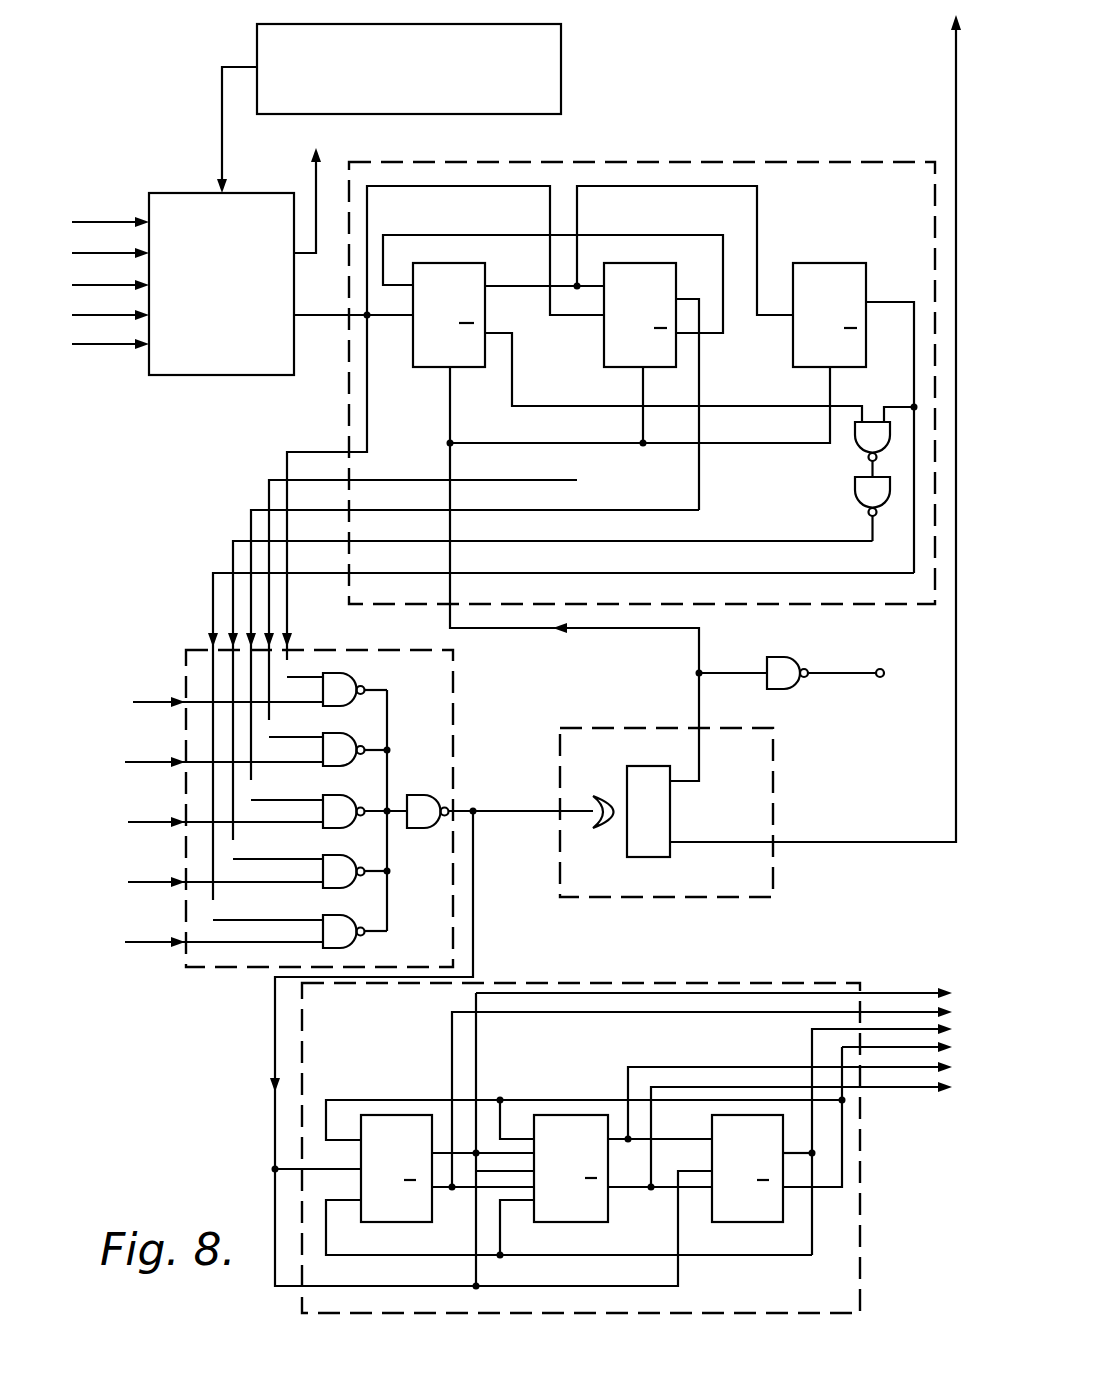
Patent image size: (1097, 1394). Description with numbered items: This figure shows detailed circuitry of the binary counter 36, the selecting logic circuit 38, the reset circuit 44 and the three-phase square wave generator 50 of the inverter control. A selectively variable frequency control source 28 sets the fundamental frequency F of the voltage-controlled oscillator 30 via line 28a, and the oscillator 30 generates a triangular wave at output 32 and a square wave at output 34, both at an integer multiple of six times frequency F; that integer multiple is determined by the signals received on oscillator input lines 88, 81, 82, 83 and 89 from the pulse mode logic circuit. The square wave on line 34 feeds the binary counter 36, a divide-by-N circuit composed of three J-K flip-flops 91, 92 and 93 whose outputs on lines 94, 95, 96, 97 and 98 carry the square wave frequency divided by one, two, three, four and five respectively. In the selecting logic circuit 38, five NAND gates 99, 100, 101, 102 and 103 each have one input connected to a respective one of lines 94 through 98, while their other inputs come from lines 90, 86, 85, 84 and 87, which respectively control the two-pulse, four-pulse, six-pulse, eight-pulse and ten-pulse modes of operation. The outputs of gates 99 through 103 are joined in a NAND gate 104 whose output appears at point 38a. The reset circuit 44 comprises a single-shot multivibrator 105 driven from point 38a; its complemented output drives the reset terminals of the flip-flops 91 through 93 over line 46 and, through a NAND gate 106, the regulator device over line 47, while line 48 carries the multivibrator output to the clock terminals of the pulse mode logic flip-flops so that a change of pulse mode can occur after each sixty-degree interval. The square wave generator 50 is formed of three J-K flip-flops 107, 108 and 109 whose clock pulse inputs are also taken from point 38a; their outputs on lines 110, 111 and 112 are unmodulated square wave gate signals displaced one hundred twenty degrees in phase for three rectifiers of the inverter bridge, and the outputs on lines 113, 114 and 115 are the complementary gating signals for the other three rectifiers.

The selectively variable frequency control source 28 is at (561, 26).
The line 28a is at (222, 126).
The voltage-controlled oscillator 30 is at (200, 378).
The output 32 is at (310, 184).
The output 34 is at (306, 322).
The binary counter 36 is at (766, 156).
The selecting logic circuit 38 is at (224, 968).
The point 38a is at (478, 784).
The reset circuit 44 is at (606, 898).
The line 46 is at (698, 684).
The line 47 is at (858, 676).
The line 48 is at (954, 100).
The three-phase square wave generator 50 is at (470, 1316).
The line 81 is at (104, 250).
The line 82 is at (104, 282).
The line 83 is at (100, 312).
The line 84 is at (150, 888).
The line 85 is at (145, 828).
The line 86 is at (145, 768).
The line 87 is at (162, 948).
The line 88 is at (120, 216).
The line 89 is at (98, 348).
The line 90 is at (158, 708).
The J-K flip-flop 91 is at (485, 270).
The J-K flip-flop 92 is at (625, 368).
The J-K flip-flop 93 is at (837, 262).
The line 94 is at (285, 446).
The line 95 is at (268, 478).
The line 96 is at (250, 508).
The line 97 is at (232, 540).
The line 98 is at (212, 572).
The NAND gate 99 is at (356, 680).
The NAND gate 100 is at (338, 732).
The NAND gate 101 is at (338, 794).
The NAND gate 102 is at (338, 854).
The NAND gate 103 is at (338, 914).
The NAND gate 104 is at (418, 830).
The single-shot multivibrator 105 is at (654, 858).
The NAND gate 106 is at (782, 657).
The J-K flip-flop 107 is at (418, 1223).
The J-K flip-flop 108 is at (598, 1223).
The J-K flip-flop 109 is at (740, 1223).
The line 110 is at (916, 982).
The line 111 is at (812, 1028).
The line 112 is at (746, 1066).
The line 113 is at (722, 1012).
The line 114 is at (888, 1050).
The line 115 is at (924, 1090).